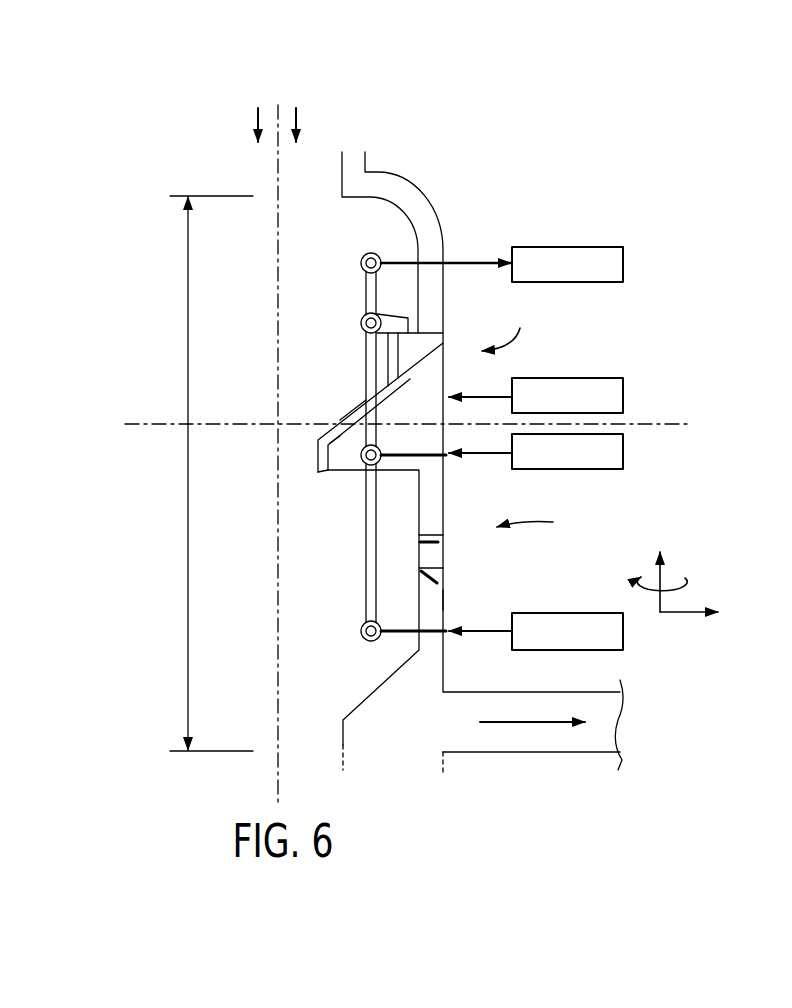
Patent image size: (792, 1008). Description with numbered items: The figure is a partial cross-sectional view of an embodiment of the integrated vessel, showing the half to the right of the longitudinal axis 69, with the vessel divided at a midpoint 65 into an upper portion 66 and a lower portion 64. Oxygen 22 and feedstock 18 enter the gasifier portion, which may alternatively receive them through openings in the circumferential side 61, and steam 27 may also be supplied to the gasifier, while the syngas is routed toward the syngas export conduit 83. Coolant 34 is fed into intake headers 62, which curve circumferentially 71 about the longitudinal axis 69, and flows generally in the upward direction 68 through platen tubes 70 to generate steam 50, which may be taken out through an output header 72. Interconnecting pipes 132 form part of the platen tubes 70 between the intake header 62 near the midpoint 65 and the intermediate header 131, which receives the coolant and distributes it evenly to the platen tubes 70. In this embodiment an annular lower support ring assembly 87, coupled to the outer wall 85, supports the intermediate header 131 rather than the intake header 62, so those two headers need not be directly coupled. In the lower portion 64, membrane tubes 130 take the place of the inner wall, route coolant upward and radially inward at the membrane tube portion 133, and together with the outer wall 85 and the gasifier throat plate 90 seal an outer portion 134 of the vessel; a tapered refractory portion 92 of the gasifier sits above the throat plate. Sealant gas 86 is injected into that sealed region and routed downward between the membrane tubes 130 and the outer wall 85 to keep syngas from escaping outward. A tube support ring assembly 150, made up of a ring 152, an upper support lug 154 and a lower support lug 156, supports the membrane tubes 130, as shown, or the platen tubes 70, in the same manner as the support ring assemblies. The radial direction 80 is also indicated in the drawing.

The feedstock 18 is at (296, 111).
The oxygen 22 is at (258, 111).
The steam 27 is at (497, 722).
The coolant 34 is at (568, 469).
The steam 50 is at (567, 247).
The circumferential side 61 is at (366, 158).
The intake header 62 is at (382, 462).
The lower portion 64 is at (188, 620).
The midpoint 65 is at (256, 424).
The upper portion 66 is at (188, 350).
The direction 68 is at (661, 565).
The longitudinal axis 69 is at (278, 245).
The platen tubes 70 is at (362, 275).
The circumferential direction 71 is at (648, 598).
The output header 72 is at (366, 256).
The radial direction 80 is at (703, 613).
The syngas export conduit 83 is at (592, 738).
The outer wall 85 is at (443, 600).
The sealant gas 86 is at (567, 378).
The lower support ring assembly 87 is at (506, 325).
The gasifier throat plate 90 is at (318, 430).
The tapered refractory portion 92 is at (345, 420).
The membrane tubes 130 is at (350, 440).
The intermediate header 131 is at (363, 316).
The interconnecting pipes 132 is at (364, 345).
The membrane tube portion 133 is at (336, 473).
The outer portion 134 is at (352, 432).
The tube support ring assembly 150 is at (544, 522).
The ring 152 is at (430, 556).
The upper support lug 154 is at (440, 541).
The lower support lug 156 is at (445, 577).